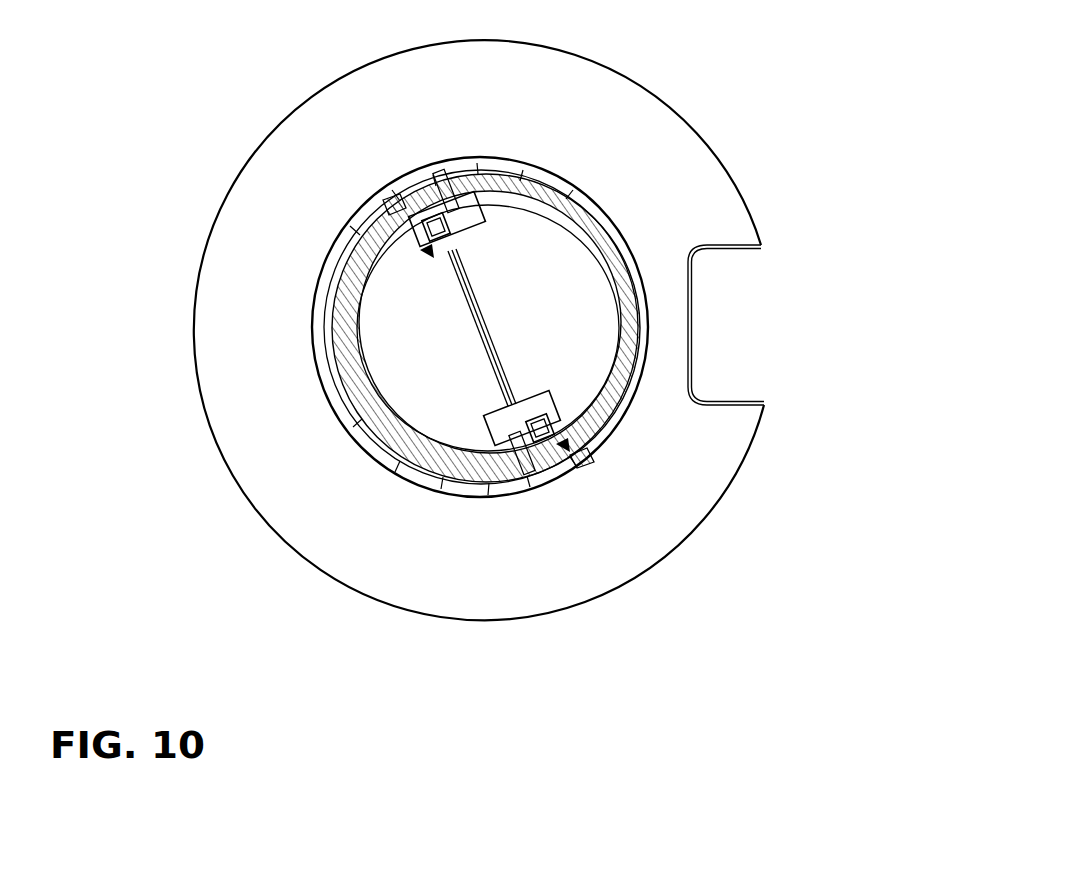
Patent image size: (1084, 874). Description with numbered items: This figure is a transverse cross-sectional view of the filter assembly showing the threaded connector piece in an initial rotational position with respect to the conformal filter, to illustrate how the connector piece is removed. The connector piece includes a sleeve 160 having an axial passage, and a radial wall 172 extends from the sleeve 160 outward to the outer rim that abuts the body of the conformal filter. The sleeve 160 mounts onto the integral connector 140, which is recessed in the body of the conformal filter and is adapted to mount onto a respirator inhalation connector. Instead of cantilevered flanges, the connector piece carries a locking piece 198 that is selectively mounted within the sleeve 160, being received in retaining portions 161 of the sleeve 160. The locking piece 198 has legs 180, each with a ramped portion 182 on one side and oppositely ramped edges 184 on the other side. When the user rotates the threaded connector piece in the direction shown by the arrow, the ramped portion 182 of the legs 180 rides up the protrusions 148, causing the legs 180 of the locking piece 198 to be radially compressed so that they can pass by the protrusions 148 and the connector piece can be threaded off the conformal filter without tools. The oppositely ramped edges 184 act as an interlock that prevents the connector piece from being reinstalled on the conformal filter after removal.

The integral connector 140 is at (348, 392).
The protrusions 148 is at (457, 197).
The sleeve 160 is at (622, 223).
The retaining portions 161 is at (573, 197).
The radial wall 172 is at (670, 456).
The legs 180 is at (423, 247).
The ramped portion 182 is at (463, 215).
The oppositely ramped edges 184 is at (417, 222).
The locking piece 198 is at (490, 309).